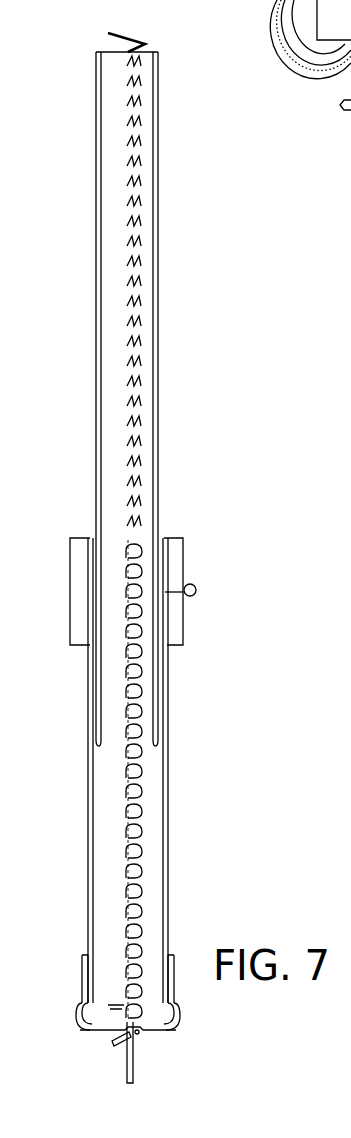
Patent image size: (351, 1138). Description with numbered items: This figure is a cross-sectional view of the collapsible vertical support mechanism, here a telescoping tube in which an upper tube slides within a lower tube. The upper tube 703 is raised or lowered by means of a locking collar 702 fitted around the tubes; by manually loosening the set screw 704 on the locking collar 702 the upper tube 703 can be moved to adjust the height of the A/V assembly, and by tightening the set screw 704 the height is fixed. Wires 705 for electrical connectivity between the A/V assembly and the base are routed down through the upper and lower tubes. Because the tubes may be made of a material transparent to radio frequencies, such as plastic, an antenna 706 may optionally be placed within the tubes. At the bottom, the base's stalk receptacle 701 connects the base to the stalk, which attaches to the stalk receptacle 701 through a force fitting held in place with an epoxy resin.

The stalk receptacle 701 is at (85, 967).
The locking collar 702 is at (82, 618).
The inner tube 703 is at (96, 300).
The set screw 704 is at (188, 594).
The wires 705 is at (140, 487).
The antenna 706 is at (127, 1053).